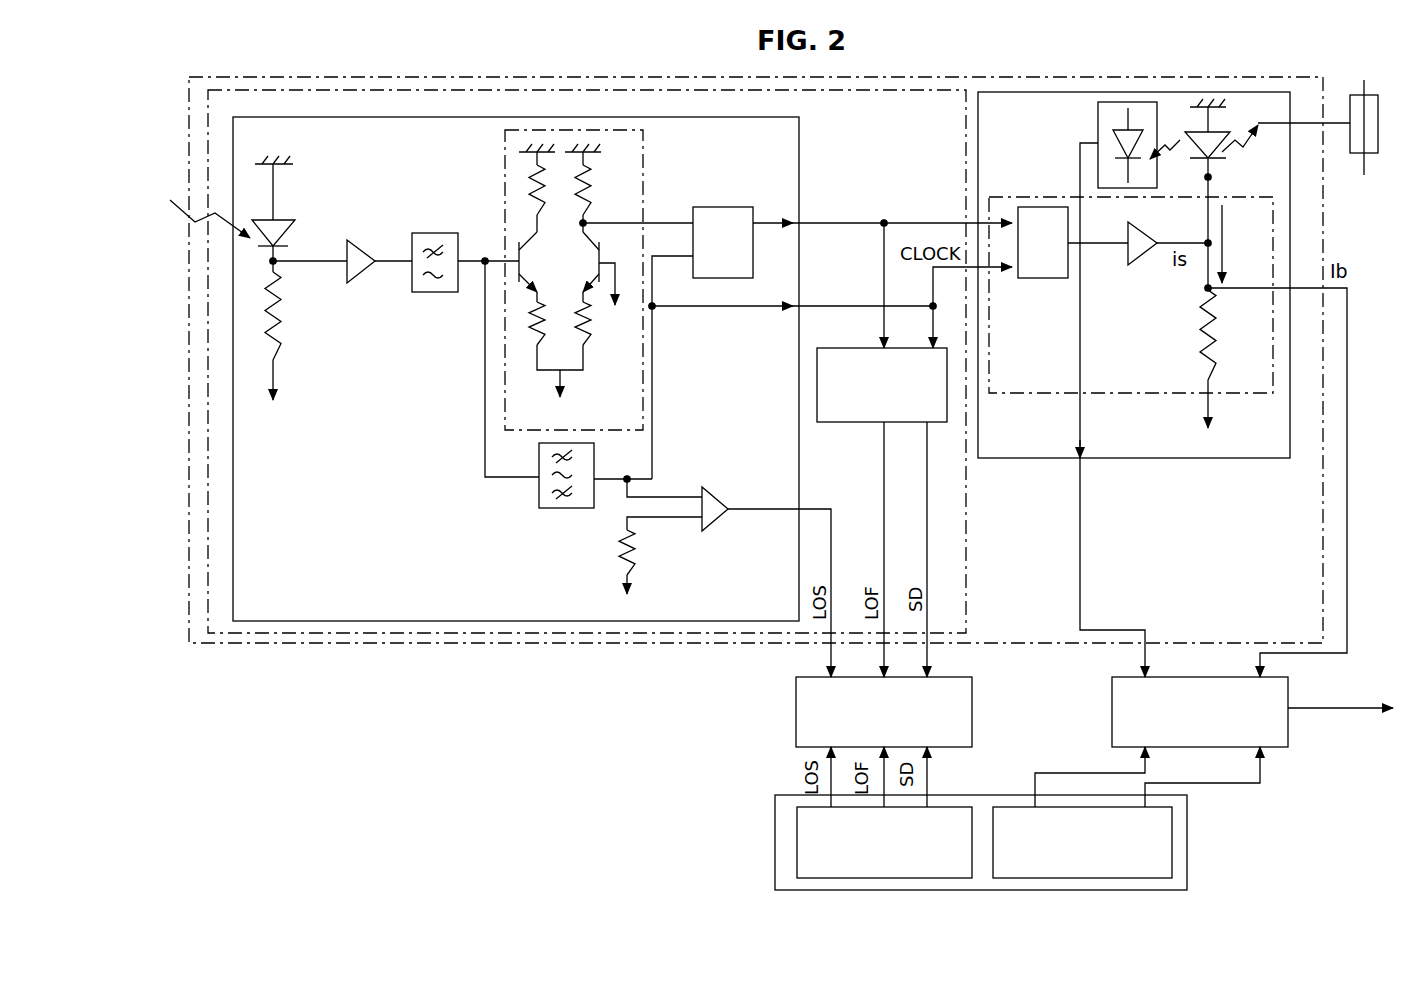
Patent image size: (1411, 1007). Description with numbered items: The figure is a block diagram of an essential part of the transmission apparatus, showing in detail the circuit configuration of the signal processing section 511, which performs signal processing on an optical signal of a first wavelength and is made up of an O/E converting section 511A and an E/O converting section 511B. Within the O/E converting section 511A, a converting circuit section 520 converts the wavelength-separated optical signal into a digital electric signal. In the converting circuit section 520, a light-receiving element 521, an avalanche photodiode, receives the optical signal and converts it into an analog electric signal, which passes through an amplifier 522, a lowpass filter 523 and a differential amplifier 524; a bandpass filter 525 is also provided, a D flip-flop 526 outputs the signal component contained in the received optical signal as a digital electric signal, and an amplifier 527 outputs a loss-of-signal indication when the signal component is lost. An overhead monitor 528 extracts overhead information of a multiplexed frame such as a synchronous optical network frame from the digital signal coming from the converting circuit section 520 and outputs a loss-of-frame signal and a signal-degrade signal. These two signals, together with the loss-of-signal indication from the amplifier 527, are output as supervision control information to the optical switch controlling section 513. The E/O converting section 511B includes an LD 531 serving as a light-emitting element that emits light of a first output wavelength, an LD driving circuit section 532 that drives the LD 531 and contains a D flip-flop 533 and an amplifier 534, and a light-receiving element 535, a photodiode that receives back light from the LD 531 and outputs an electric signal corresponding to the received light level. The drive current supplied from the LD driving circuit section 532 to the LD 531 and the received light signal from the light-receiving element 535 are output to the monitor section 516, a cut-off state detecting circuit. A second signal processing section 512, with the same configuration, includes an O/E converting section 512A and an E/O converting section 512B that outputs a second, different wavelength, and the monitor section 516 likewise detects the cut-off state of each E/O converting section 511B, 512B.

The converting circuit section 520 is at (373, 621).
The signal processing section 511 is at (580, 645).
The O/E converting section 511A is at (470, 635).
The E/O converting section 511B is at (1138, 458).
The light-receiving element 521 is at (290, 230).
The amplifier 522 is at (357, 275).
The lowpass filter 523 is at (438, 233).
The differential amplifier 524 is at (643, 167).
The bandpass filter 525 is at (567, 508).
The D flip-flop 526 is at (733, 207).
The amplifier 527 is at (715, 495).
The overhead monitor 528 is at (858, 422).
The LD 531 is at (1220, 141).
The LD driving circuit section 532 is at (1013, 397).
The D flip-flop 533 is at (1045, 278).
The amplifier 534 is at (1143, 262).
The light-receiving element 535 is at (1098, 131).
The signal processing section 512 is at (775, 818).
The O/E converting section 512A is at (797, 842).
The E/O converting section 512B is at (1172, 840).
The optical switch controlling section 513 is at (796, 712).
The monitor section 516 is at (1112, 712).